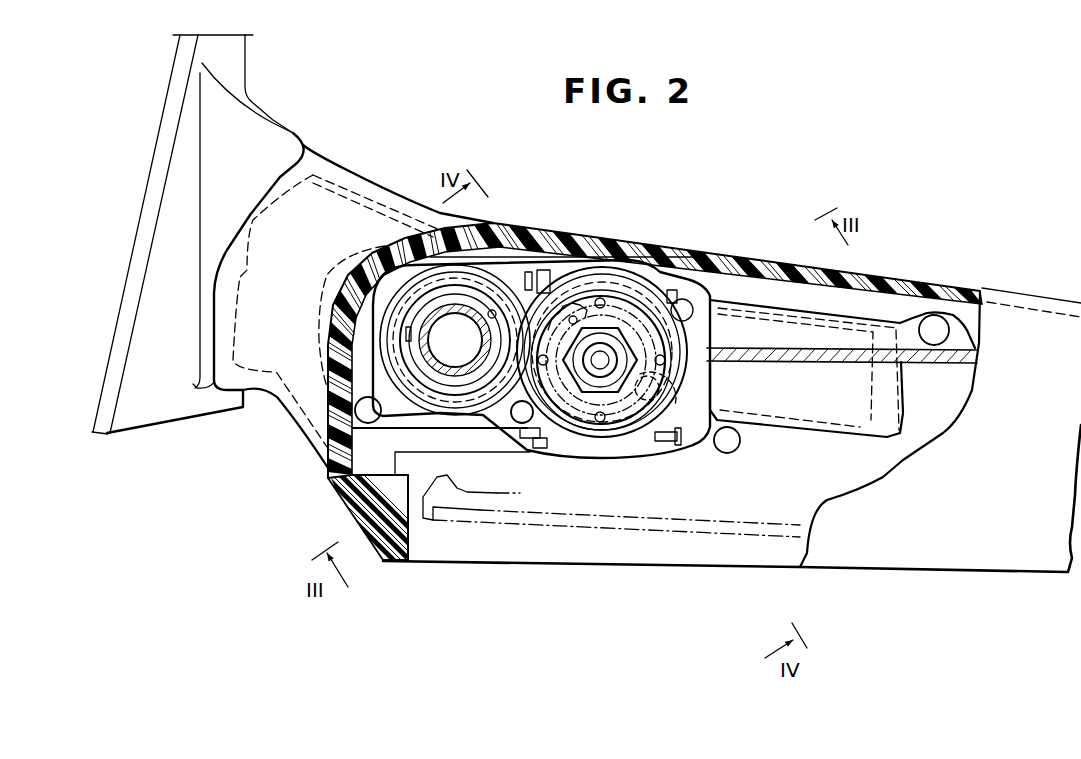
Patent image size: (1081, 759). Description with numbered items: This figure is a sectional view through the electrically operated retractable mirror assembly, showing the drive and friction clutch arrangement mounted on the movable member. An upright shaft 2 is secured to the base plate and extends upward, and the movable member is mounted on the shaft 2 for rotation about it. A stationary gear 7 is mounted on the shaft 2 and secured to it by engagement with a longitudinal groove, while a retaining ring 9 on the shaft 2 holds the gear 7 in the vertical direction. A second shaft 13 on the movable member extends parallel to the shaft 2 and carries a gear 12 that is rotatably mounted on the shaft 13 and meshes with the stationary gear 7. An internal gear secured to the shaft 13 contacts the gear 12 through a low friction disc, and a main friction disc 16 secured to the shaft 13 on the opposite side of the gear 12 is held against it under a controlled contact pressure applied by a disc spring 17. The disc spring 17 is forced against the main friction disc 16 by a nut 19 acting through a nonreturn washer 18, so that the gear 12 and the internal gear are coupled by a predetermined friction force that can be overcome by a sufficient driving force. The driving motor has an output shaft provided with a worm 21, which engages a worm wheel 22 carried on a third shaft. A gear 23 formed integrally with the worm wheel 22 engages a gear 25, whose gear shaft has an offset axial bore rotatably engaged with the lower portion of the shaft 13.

The upright shaft 2 is at (462, 330).
The stationary gear 7 is at (500, 283).
The retaining ring 9 is at (423, 310).
The gear 12 is at (597, 277).
The shaft 13 is at (600, 365).
The main friction disc 16 is at (600, 410).
The disc spring 17 is at (582, 410).
The nonreturn washer 18 is at (617, 327).
The nut 19 is at (600, 347).
The worm 21 is at (700, 337).
The worm wheel 22 is at (693, 433).
The gear 23 is at (647, 413).
The gear 25 is at (557, 435).